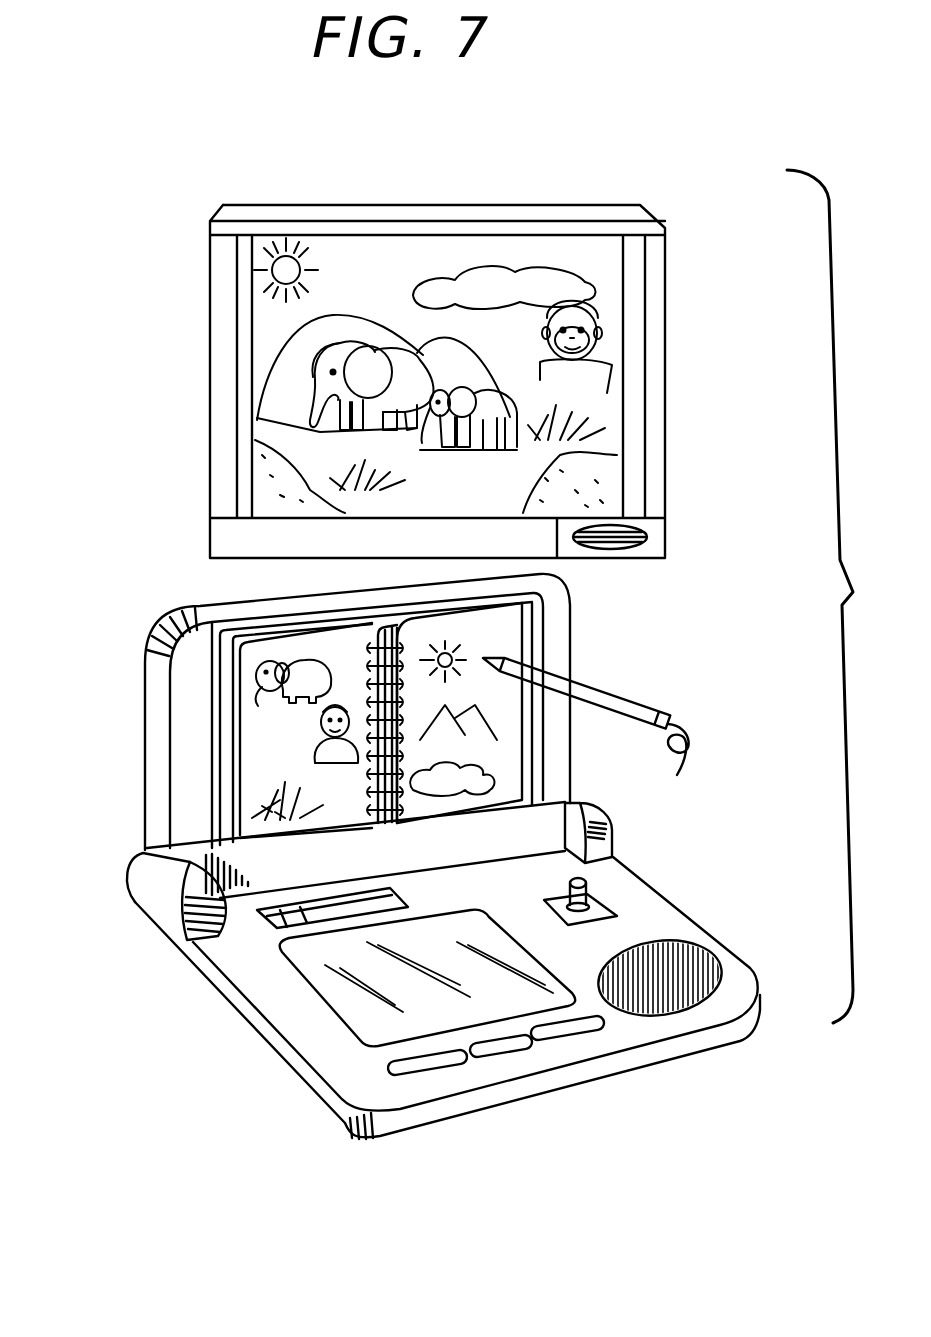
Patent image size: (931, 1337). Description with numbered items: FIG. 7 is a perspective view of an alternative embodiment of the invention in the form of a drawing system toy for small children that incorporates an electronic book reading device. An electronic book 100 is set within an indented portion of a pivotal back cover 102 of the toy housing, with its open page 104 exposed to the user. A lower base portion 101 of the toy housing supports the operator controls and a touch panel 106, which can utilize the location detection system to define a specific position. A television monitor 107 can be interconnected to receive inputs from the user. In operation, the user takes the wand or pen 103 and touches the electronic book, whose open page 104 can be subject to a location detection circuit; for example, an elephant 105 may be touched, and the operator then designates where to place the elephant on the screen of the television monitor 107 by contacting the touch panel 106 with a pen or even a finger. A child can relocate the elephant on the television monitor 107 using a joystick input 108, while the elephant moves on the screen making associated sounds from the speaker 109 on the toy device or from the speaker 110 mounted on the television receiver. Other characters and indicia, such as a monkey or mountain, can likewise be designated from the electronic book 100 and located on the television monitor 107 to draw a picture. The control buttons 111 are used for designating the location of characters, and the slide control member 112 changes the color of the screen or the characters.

The electronic book 100 is at (223, 787).
The lower base portion 101 is at (203, 1055).
The pivotal back cover 102 is at (645, 623).
The wand or pen 103 is at (683, 680).
The open page 104 is at (257, 732).
The elephant 105 is at (250, 663).
The touch panel 106 is at (273, 1118).
The television monitor 107 is at (707, 288).
The joystick input 108 is at (697, 830).
The speaker 109 is at (750, 897).
The speaker 110 is at (707, 520).
The control buttons 111 is at (538, 1107).
The slide control member 112 is at (150, 987).